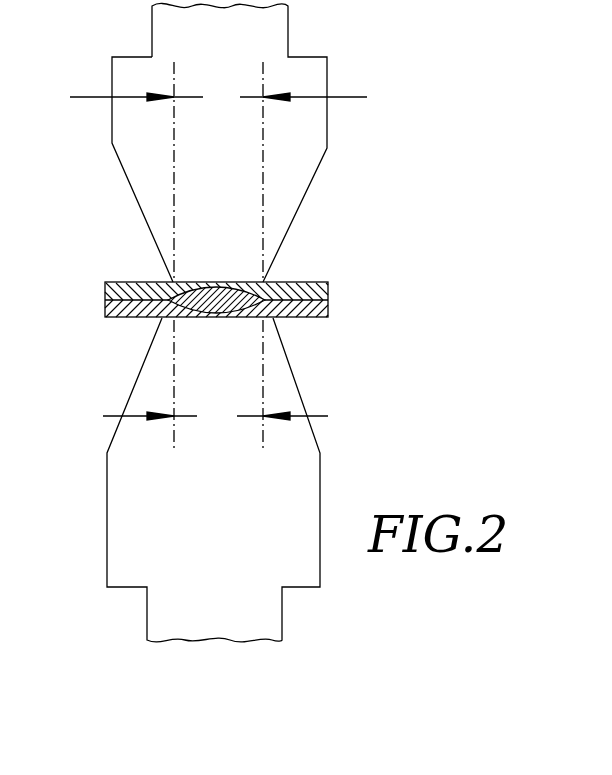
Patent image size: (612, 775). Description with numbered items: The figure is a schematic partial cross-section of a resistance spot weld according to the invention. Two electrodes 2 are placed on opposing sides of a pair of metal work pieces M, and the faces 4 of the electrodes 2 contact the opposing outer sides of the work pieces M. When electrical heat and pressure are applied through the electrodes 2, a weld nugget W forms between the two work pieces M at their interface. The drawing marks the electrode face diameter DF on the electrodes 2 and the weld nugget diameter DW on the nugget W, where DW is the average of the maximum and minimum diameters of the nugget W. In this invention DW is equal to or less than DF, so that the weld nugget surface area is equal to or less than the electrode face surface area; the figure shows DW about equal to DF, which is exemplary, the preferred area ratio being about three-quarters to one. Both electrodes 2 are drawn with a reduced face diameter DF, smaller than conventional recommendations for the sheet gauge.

The electrode 2 is at (327, 80).
The electrode face 4 is at (208, 282).
The metal work piece M is at (328, 292).
The weld nugget W is at (160, 318).
The electrode face diameter DF is at (218, 100).
The weld nugget diameter DW is at (215, 418).